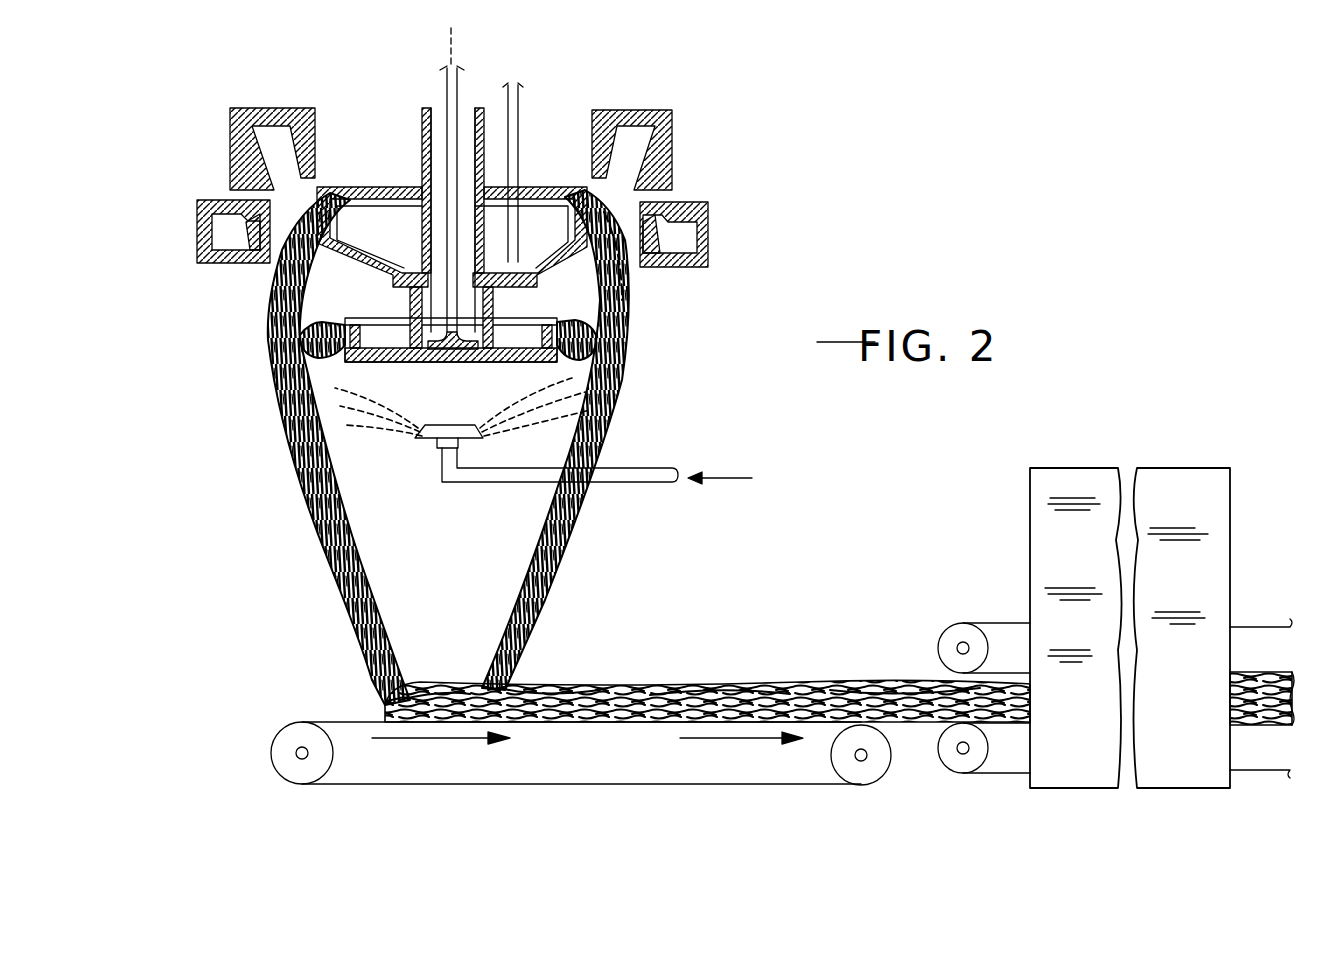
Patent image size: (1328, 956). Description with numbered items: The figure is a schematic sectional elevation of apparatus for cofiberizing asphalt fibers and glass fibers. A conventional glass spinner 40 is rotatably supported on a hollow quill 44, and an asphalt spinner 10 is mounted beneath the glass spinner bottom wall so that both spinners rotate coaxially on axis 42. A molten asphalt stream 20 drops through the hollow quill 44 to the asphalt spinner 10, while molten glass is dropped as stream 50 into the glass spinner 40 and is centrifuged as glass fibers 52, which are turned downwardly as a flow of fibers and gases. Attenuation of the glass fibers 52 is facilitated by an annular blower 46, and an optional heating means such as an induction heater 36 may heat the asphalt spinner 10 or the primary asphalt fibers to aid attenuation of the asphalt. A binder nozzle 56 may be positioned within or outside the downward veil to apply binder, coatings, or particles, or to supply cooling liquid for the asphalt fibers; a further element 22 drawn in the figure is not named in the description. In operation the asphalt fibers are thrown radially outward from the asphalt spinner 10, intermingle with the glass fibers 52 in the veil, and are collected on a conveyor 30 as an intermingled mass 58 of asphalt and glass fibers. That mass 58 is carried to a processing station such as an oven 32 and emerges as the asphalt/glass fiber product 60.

The asphalt spinner 10 is at (543, 364).
The molten asphalt stream 20 is at (456, 88).
The fiber veil 22 is at (620, 328).
The conveyor 30 is at (336, 718).
The oven 32 is at (1066, 470).
The induction heater 36 is at (674, 135).
The glass spinner 40 is at (386, 287).
The axis 42 is at (447, 50).
The hollow quill 44 is at (422, 132).
The annular blower 46 is at (708, 229).
The molten glass stream 50 is at (520, 112).
The glass fibers 52 is at (619, 214).
The binder nozzle 56 is at (429, 440).
The intermingled mass 58 is at (690, 682).
The asphalt/glass fiber product 60 is at (1251, 672).